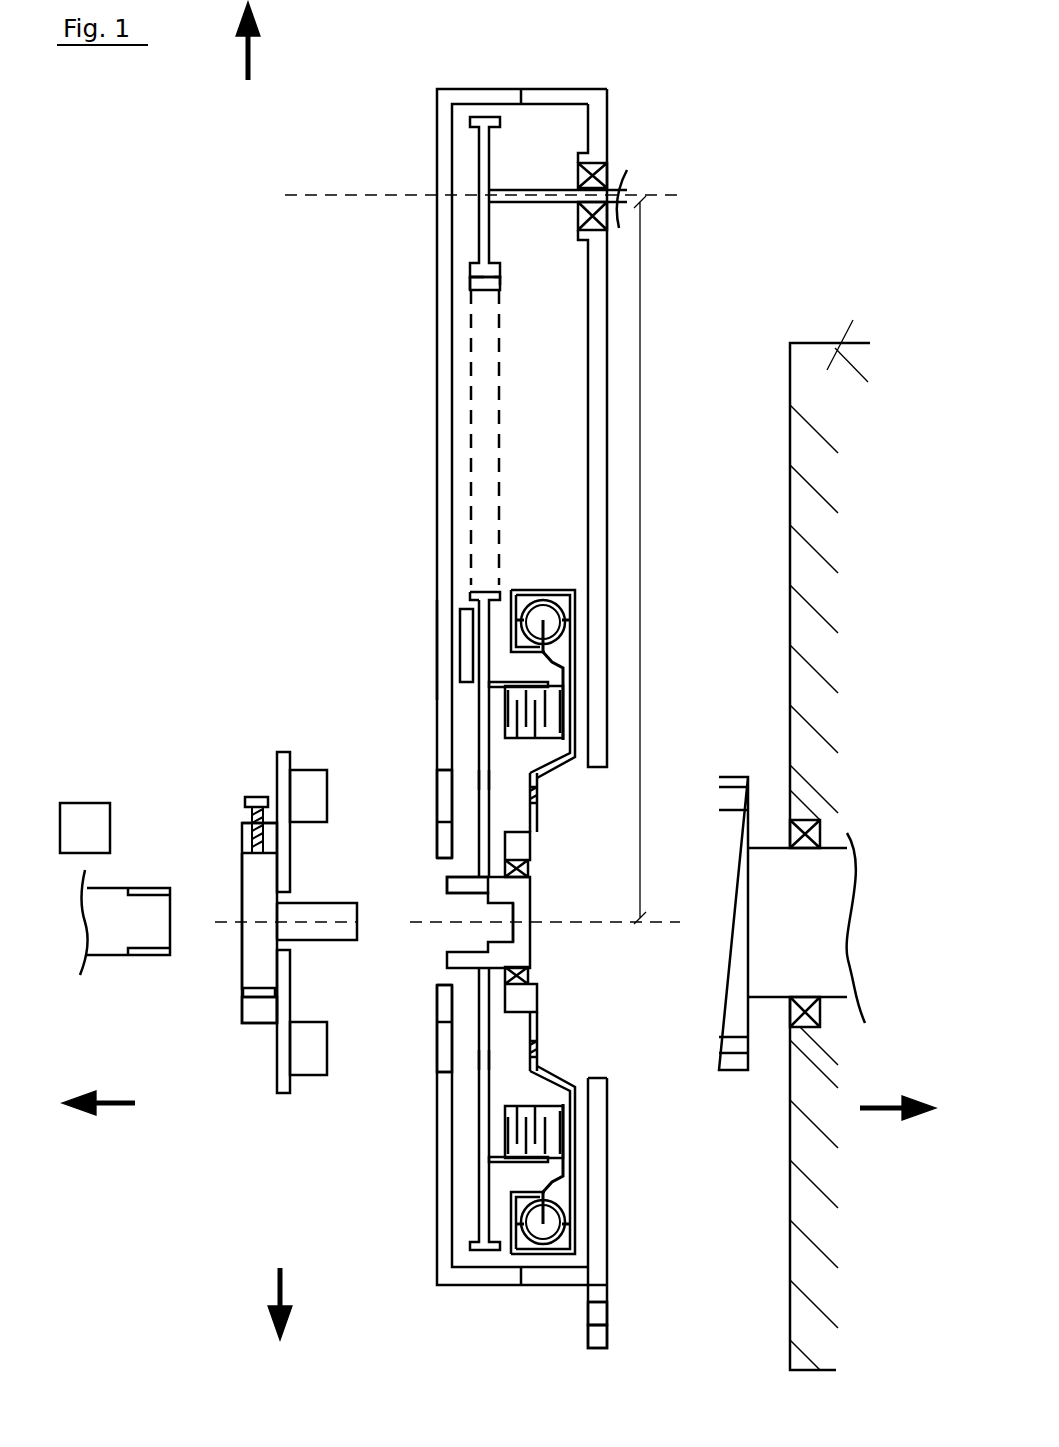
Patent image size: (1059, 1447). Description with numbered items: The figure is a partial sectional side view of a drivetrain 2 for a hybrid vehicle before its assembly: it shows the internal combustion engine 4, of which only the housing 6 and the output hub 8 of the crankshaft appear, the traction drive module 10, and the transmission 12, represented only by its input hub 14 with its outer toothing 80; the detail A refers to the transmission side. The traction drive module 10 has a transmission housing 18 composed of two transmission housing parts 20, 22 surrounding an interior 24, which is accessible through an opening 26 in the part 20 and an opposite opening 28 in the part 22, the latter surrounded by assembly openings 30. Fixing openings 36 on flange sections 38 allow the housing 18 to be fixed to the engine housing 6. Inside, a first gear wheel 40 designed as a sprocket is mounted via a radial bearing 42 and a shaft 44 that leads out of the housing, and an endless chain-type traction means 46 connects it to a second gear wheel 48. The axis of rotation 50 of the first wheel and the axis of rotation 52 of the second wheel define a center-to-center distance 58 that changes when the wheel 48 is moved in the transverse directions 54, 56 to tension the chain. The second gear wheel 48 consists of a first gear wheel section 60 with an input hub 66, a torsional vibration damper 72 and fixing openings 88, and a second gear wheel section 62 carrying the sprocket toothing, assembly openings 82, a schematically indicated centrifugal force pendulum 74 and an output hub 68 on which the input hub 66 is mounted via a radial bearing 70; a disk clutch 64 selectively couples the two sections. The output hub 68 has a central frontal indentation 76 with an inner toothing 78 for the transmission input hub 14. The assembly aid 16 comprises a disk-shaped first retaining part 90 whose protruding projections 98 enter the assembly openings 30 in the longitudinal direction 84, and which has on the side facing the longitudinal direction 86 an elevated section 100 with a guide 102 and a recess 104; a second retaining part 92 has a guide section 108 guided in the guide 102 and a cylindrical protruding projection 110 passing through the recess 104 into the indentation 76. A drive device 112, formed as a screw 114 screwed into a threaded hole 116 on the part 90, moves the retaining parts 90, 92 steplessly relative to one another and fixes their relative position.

The drivetrain 2 is at (835, 77).
The internal combustion engine 4 is at (826, 338).
The housing 6 is at (845, 342).
The output hub 8 is at (747, 912).
The traction drive module 10 is at (412, 78).
The transmission 12 is at (85, 828).
The input hub 14 is at (103, 943).
The assembly aid 16 is at (210, 815).
The transmission housing 18 is at (435, 322).
The transmission housing part 20 is at (598, 118).
The transmission housing part 22 is at (443, 163).
The interior 24 is at (535, 157).
The opening 26 is at (602, 1042).
The opening 28 is at (437, 975).
The assembly openings 30 is at (445, 787).
The fixing openings 36 is at (592, 1312).
The flange sections 38 is at (593, 1330).
The first gear wheel 40 is at (479, 217).
The radial bearing 42 is at (605, 163).
The shaft 44 is at (545, 188).
The traction means 46 is at (468, 373).
The second gear wheel 48 is at (544, 575).
The axis of rotation 50 is at (315, 195).
The axis of rotation 52 is at (430, 922).
The transverse direction 54 is at (243, 53).
The transverse direction 56 is at (268, 1290).
The center-to-center distance 58 is at (657, 560).
The first gear wheel section 60 is at (577, 1141).
The second gear wheel section 62 is at (478, 730).
The clutch 64 is at (537, 1147).
The input hub 66 is at (527, 998).
The output hub 68 is at (518, 893).
The radial bearing 70 is at (530, 862).
The torsional vibration damper 72 is at (543, 1215).
The centrifugal force pendulum 74 is at (463, 633).
The indentation 76 is at (503, 930).
The inner toothing 78 is at (448, 892).
The outer toothing 80 is at (152, 953).
The assembly openings 82 is at (483, 790).
The longitudinal direction 84 is at (898, 1135).
The longitudinal direction 86 is at (98, 1131).
The fixing openings 88 is at (530, 795).
The first retaining part 90 is at (283, 750).
The second retaining part 92 is at (240, 887).
The protruding projections 98 is at (308, 783).
The elevated section 100 is at (253, 1008).
The guide 102 is at (257, 990).
The recess 104 is at (283, 943).
The guide section 108 is at (252, 907).
The protruding projection 110 is at (293, 930).
The drive device 112 is at (235, 795).
The screw 114 is at (237, 797).
The threaded hole 116 is at (253, 832).
The signal A is at (150, 800).